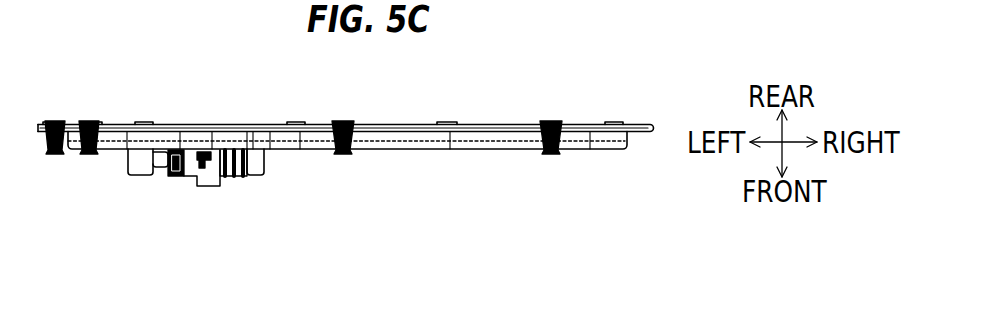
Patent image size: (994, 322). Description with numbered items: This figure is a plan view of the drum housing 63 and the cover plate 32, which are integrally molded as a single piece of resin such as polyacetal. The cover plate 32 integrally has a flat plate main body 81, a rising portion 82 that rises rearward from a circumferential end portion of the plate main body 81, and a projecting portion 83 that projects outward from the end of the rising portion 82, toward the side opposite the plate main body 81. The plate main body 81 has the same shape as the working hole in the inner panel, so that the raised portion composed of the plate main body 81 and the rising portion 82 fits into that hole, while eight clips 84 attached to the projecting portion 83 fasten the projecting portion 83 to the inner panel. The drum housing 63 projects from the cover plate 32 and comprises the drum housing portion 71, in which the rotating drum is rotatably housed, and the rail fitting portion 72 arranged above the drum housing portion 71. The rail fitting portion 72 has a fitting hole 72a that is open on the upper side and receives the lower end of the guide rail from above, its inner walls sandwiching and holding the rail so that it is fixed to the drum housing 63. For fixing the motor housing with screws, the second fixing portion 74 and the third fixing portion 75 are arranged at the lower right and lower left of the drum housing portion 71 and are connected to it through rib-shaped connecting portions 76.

The cover plate 32 is at (655, 123).
The drum housing 63 is at (168, 172).
The drum housing portion 71 is at (227, 177).
The rail fitting portion 72 is at (212, 180).
The fitting hole 72a is at (191, 160).
The second fixing portion 74 is at (250, 177).
The third fixing portion 75 is at (142, 177).
The rib-shaped connecting portion 76 is at (165, 140).
The plate main body 81 is at (412, 150).
The rising portion 82 is at (453, 148).
The projecting portion 83 is at (496, 130).
The clip 84 is at (52, 155).